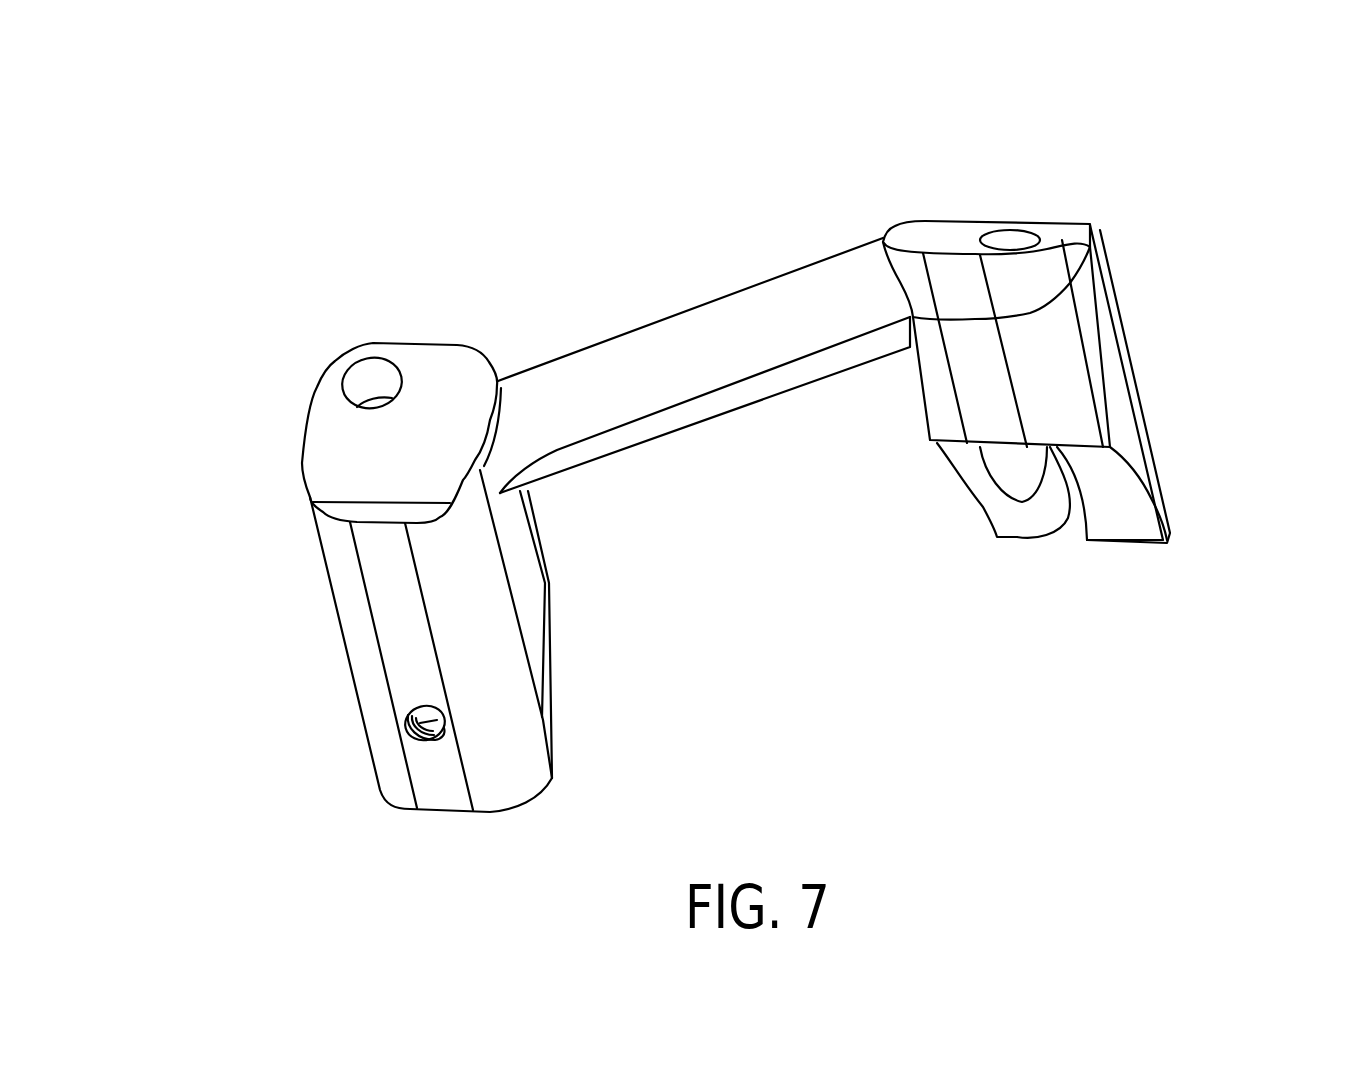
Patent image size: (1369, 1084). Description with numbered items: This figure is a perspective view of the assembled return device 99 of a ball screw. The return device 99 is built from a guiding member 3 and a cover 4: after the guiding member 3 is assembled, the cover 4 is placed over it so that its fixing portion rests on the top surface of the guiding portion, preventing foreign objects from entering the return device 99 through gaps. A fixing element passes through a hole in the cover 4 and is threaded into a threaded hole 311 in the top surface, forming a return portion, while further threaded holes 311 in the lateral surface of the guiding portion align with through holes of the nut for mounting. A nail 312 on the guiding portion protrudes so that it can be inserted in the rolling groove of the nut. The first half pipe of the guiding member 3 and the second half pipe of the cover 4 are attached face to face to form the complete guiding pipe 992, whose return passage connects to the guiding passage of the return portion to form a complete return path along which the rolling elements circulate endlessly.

The return device 99 is at (384, 233).
The guiding pipe 992 is at (768, 303).
The cover 4 is at (643, 310).
The guiding member 3 is at (737, 423).
The threaded holes 311 is at (405, 722).
The nail 312 is at (1017, 482).